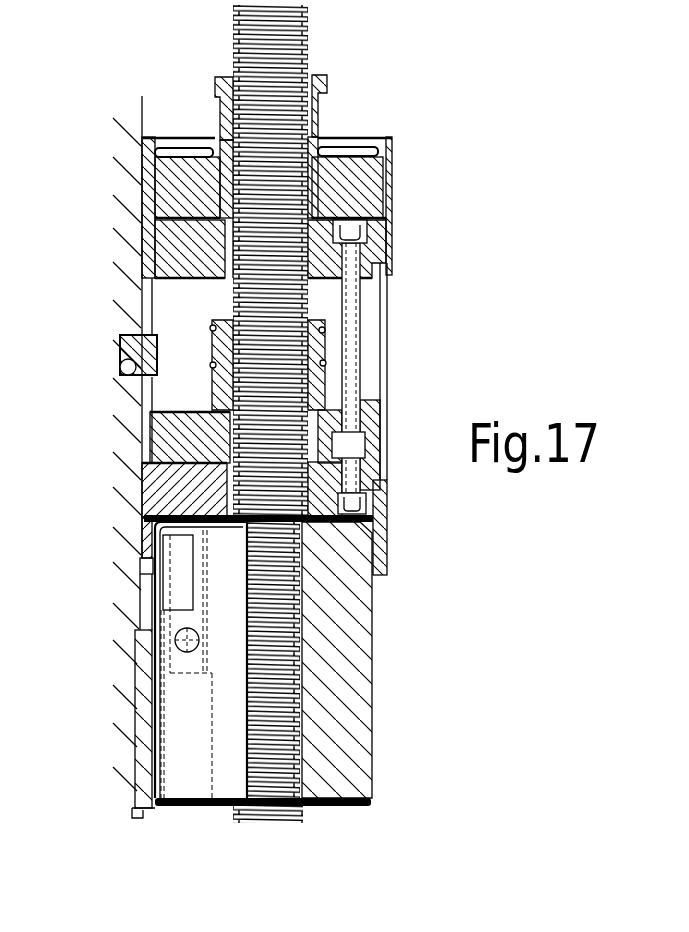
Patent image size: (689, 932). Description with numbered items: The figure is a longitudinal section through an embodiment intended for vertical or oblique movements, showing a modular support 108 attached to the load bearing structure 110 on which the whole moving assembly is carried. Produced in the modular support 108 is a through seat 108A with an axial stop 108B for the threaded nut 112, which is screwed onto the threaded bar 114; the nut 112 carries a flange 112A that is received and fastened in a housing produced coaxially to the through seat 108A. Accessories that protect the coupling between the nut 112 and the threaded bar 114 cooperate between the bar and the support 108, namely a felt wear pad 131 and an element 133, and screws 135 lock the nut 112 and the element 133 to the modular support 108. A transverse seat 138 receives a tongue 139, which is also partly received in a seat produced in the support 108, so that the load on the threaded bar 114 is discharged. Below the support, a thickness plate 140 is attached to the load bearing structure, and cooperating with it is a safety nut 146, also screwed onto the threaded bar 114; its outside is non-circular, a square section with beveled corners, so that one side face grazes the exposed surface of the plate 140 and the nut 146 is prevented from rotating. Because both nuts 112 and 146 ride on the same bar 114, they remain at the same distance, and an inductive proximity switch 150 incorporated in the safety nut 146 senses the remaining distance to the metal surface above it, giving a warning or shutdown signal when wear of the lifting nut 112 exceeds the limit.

The load bearing structure 110 is at (147, 104).
The threaded bar 114 is at (233, 44).
The felt wear pad 131 is at (176, 188).
The modular support 108 is at (138, 283).
The axial stop 108B is at (211, 328).
The through seat 108A is at (323, 340).
The threaded nut 112 is at (358, 386).
The flange 112A is at (167, 450).
The element 133 is at (135, 500).
The screws 135 is at (352, 478).
The tongue 139 is at (120, 341).
The transverse seat 138 is at (126, 375).
The inductive proximity switch 150 is at (140, 562).
The thickness plate 140 is at (135, 714).
The safety nut 146 is at (358, 708).